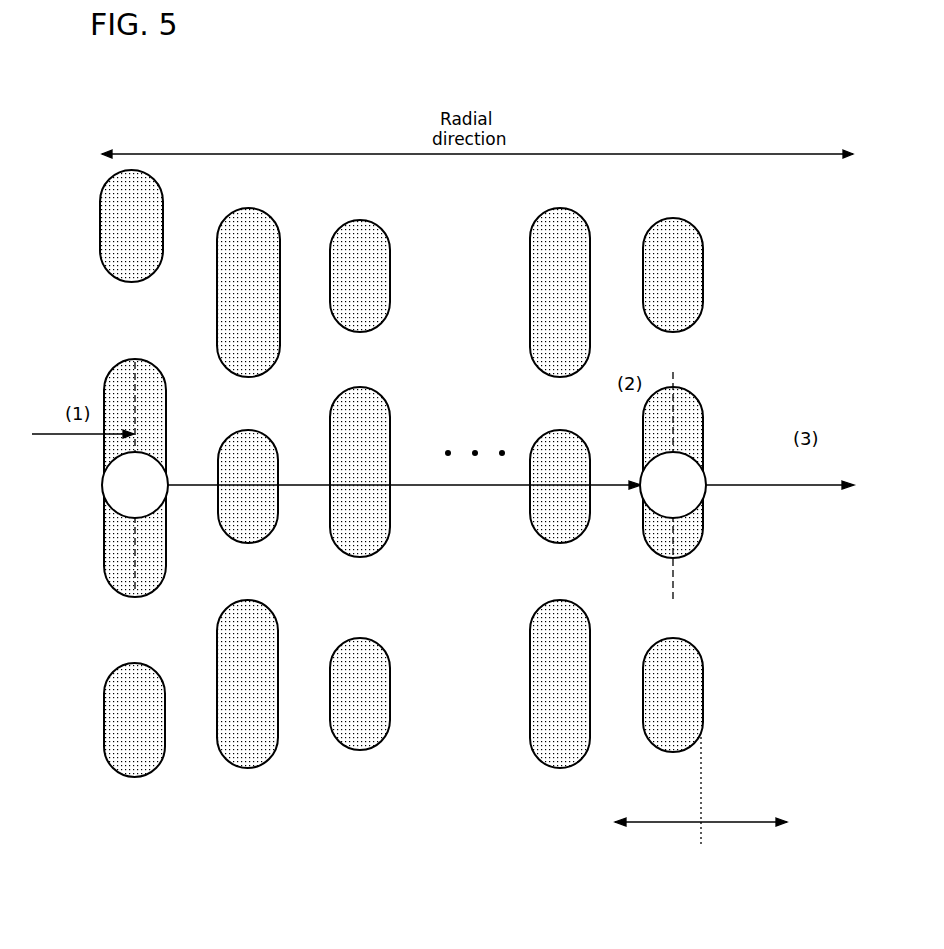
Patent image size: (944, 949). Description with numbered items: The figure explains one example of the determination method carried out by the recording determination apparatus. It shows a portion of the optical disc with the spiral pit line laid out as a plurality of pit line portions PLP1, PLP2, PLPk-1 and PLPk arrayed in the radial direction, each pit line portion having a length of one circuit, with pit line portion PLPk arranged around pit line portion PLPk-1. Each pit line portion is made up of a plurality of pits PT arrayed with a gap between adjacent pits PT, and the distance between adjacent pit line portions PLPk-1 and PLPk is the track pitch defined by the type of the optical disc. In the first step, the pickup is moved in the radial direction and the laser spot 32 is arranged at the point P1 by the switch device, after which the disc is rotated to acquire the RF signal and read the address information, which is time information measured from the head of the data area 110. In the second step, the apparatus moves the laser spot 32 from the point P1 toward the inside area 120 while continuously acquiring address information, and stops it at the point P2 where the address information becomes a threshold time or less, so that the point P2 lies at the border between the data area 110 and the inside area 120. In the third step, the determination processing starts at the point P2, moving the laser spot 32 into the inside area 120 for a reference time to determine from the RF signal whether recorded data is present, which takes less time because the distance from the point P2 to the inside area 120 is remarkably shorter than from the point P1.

The laser spot 32 is at (145, 503).
The data area 110 is at (647, 840).
The inside area 120 is at (748, 800).
The pit PT is at (150, 396).
The point P1 is at (152, 477).
The point P2 is at (687, 481).
The pit line portion PLPk is at (251, 190).
The pit line portion PLPk-1 is at (363, 195).
The pit line portion PLP2 is at (558, 185).
The pit line portion PLP1 is at (675, 195).